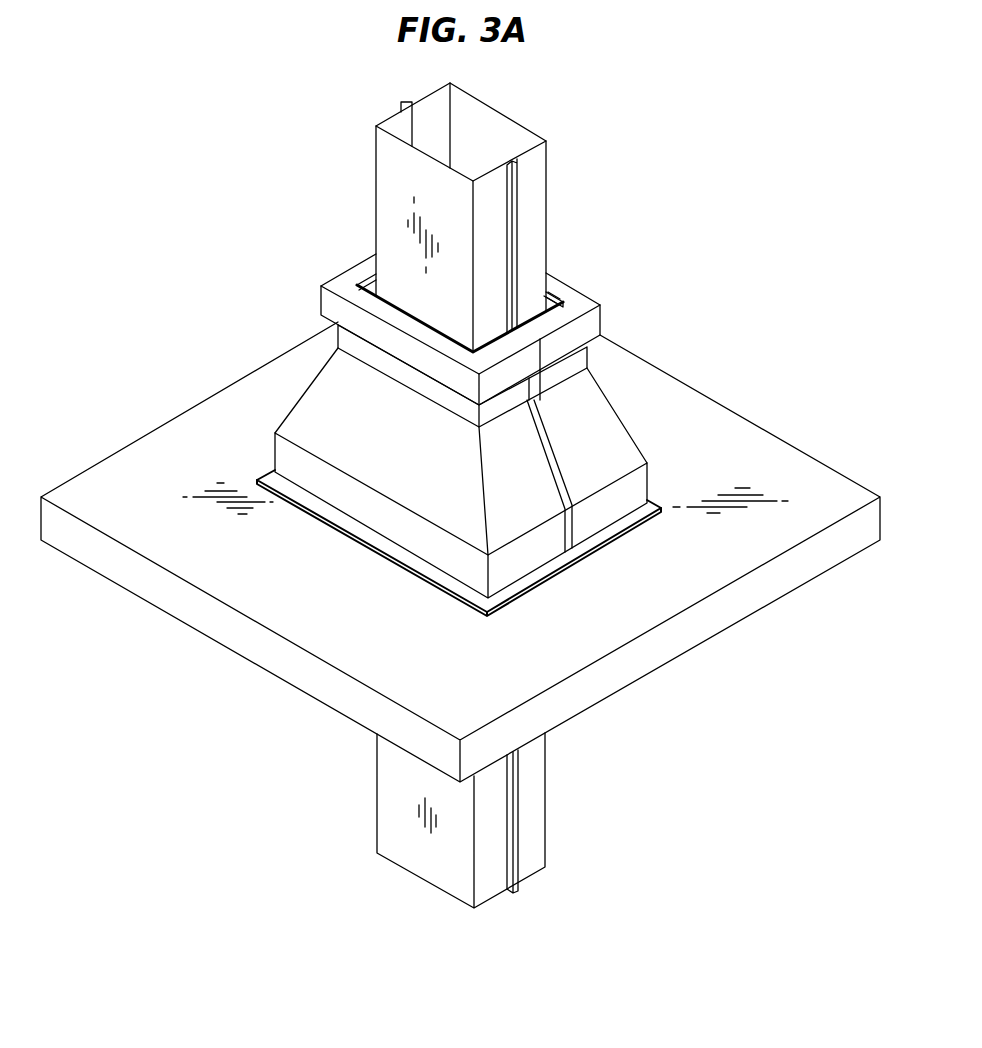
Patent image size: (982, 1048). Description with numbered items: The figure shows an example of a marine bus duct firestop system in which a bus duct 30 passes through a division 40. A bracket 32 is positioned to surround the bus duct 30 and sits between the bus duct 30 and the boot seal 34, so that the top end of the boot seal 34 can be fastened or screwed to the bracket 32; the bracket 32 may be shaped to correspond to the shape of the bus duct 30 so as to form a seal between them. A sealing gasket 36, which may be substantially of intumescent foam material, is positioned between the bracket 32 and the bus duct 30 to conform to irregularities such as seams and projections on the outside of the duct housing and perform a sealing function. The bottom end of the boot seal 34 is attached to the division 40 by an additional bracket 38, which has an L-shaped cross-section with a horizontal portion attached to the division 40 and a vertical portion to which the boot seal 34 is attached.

The bus duct 30 is at (533, 173).
The bracket 32 is at (580, 300).
The boot seal 34 is at (570, 412).
The sealing gasket 36 is at (552, 303).
The additional bracket 38 is at (633, 517).
The division 40 is at (743, 603).